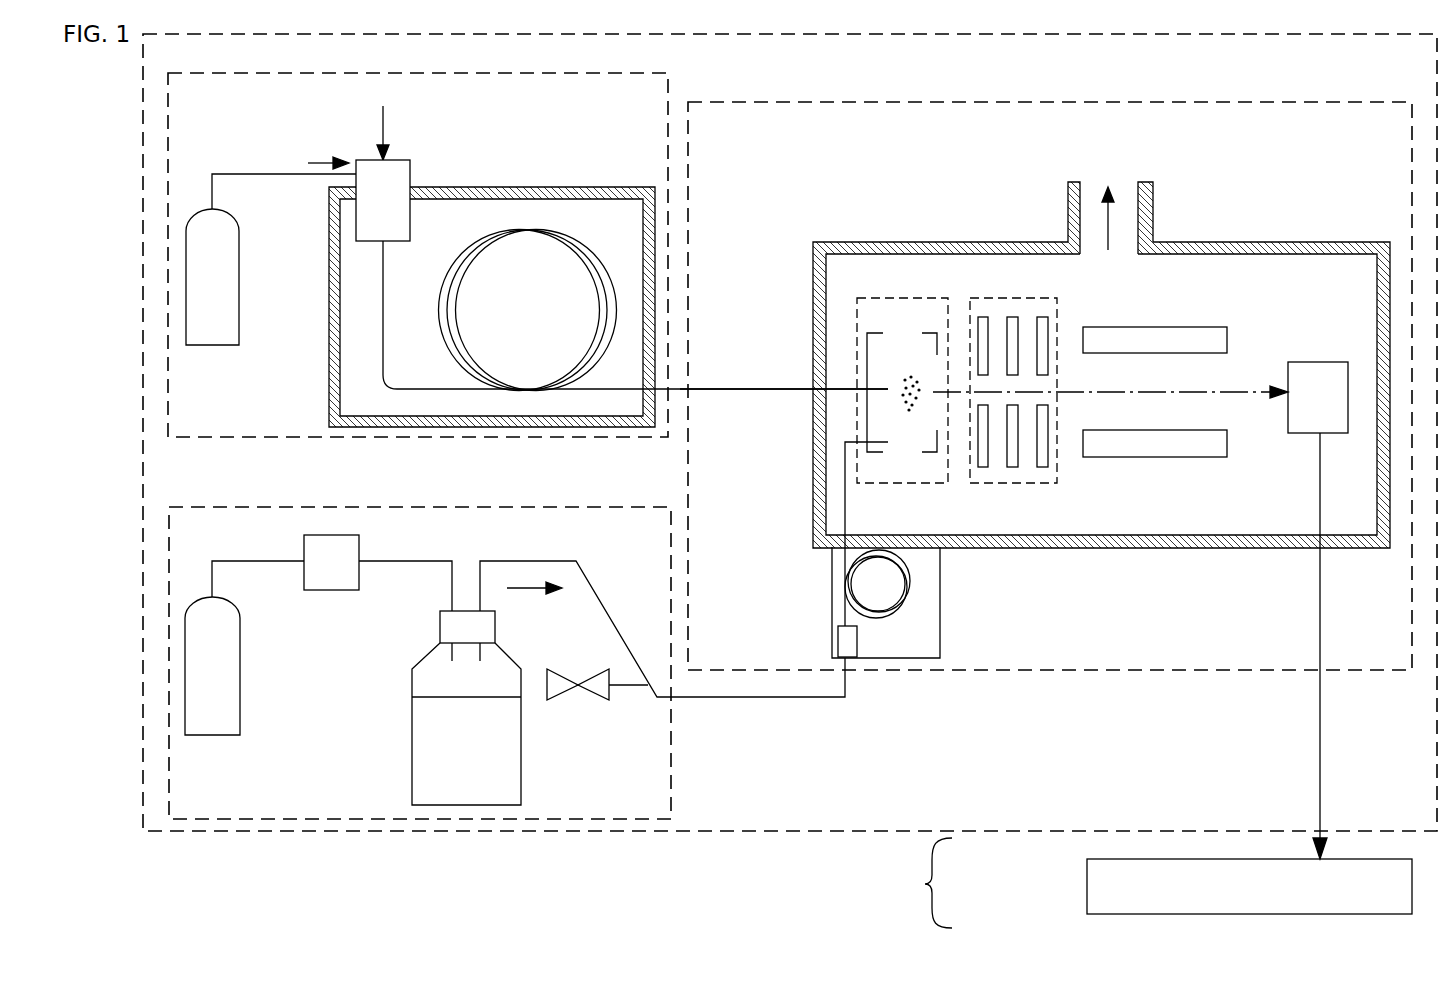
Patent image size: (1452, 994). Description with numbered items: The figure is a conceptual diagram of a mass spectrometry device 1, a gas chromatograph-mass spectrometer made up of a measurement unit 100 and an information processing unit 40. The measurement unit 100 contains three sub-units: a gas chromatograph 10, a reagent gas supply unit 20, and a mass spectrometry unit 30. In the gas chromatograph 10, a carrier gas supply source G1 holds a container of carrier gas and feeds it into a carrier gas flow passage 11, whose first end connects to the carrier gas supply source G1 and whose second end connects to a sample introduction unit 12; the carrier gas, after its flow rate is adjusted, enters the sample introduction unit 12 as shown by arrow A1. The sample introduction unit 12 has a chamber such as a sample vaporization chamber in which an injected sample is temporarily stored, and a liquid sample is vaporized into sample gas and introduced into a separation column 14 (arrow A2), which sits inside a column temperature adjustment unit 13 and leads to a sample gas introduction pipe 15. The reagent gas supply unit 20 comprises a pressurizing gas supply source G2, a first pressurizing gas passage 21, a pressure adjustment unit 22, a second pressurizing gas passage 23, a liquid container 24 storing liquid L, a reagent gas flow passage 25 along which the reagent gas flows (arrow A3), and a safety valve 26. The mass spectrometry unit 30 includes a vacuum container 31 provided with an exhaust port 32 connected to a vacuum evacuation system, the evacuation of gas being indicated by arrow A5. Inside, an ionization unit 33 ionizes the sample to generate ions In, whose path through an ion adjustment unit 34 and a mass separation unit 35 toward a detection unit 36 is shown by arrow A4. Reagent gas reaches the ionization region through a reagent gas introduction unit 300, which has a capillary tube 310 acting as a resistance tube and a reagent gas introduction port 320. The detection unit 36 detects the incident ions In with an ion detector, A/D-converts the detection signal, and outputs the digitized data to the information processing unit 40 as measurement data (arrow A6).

The mass spectrometry device 1 is at (925, 884).
The measurement unit 100 is at (1087, 821).
The gas chromatograph 10 is at (248, 437).
The carrier gas flow passage 11 is at (265, 172).
The sample introduction unit 12 is at (400, 172).
The column temperature adjustment unit 13 is at (465, 186).
The separation column 14 is at (527, 230).
The sample gas introduction pipe 15 is at (622, 391).
The carrier gas supply source G1 is at (218, 345).
The arrow indicating introduction of carrier gas A1 is at (305, 162).
The arrow indicating introduction of sample gas A2 is at (385, 108).
The reagent gas supply unit 20 is at (437, 535).
The first pressurizing gas passage 21 is at (265, 561).
The pressure adjustment unit 22 is at (330, 585).
The second pressurizing gas passage 23 is at (390, 561).
The liquid container 24 is at (428, 683).
The reagent gas flow passage 25 is at (523, 559).
The safety valve 26 is at (609, 700).
The liquid L is at (428, 768).
The pressurizing gas supply source G2 is at (212, 735).
The arrow indicating reagent gas flow A3 is at (545, 593).
The mass spectrometry unit 30 is at (750, 102).
The vacuum container 31 is at (848, 241).
The exhaust port 32 is at (1068, 198).
The ionization unit 33 is at (943, 318).
The ion adjustment unit 34 is at (1018, 306).
The mass separation unit 35 is at (1202, 336).
The detection unit 36 is at (1322, 362).
The ions In is at (903, 385).
The arrow indicating path of ions A4 is at (1215, 392).
The arrow indicating evacuation A5 is at (1112, 228).
The arrow indicating output of measurement data A6 is at (1322, 800).
The reagent gas introduction unit 300 is at (932, 643).
The capillary tube 310 is at (910, 585).
The reagent gas introduction port 320 is at (900, 454).
The information processing unit 40 is at (1087, 884).